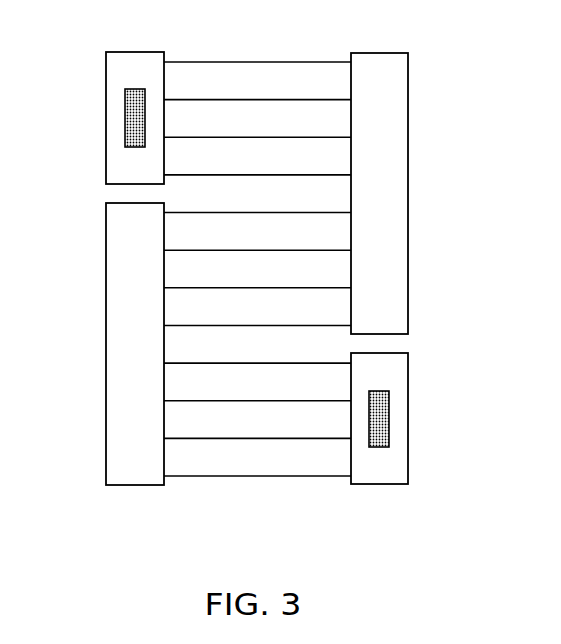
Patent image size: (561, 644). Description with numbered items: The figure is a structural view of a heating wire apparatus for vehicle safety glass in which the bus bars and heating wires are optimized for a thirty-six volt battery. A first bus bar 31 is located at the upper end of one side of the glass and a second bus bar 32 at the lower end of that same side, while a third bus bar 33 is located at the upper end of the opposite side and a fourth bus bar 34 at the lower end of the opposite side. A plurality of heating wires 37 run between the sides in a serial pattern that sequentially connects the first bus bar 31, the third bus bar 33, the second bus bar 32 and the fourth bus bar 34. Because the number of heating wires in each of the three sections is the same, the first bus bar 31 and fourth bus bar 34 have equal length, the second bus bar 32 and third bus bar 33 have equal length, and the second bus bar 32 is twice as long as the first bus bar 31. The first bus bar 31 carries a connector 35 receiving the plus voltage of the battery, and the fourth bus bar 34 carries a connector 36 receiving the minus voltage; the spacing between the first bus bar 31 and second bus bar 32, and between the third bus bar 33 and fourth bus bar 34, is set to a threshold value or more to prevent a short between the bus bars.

The first bus bar 31 is at (123, 163).
The second bus bar 32 is at (125, 343).
The third bus bar 33 is at (387, 193).
The fourth bus bar 34 is at (388, 369).
The connector 35 is at (133, 89).
The connector 36 is at (377, 448).
The heating wires 37 is at (255, 477).